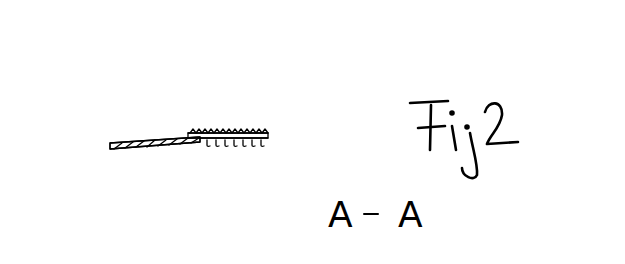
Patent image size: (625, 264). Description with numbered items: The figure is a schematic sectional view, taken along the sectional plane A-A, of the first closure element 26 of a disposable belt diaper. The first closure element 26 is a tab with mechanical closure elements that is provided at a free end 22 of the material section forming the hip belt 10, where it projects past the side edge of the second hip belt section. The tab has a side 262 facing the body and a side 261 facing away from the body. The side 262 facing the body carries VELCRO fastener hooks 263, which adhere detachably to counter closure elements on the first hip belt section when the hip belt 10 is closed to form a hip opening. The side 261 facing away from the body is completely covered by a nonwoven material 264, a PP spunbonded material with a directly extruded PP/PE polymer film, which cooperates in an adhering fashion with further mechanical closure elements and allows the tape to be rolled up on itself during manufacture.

The hip belt 10 is at (135, 133).
The free end 22 is at (141, 114).
The first closure element 26 is at (259, 115).
The side facing away from the body 261 is at (202, 108).
The side facing the body 262 is at (212, 157).
The VELCRO fastener hooks 263 is at (265, 147).
The nonwoven material 264 is at (262, 132).